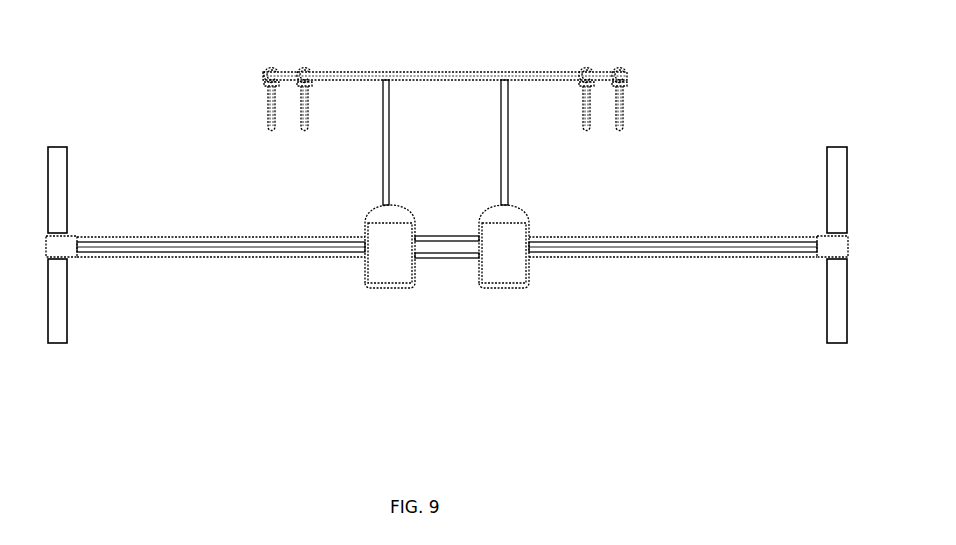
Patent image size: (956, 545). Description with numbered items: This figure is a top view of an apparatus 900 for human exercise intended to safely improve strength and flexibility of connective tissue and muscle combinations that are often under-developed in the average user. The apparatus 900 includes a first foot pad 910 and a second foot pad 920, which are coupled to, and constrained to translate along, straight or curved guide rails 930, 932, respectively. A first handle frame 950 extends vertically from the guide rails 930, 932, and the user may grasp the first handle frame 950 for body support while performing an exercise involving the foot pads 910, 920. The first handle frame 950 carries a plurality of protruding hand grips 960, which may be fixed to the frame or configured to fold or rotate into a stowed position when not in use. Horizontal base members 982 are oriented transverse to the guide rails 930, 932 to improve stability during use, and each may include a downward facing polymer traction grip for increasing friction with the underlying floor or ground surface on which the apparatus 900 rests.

The apparatus for human exercise 900 is at (206, 68).
The first foot pad 910 is at (517, 270).
The second foot pad 920 is at (386, 275).
The guide rail 930 is at (627, 238).
The guide rail 932 is at (238, 238).
The first handle frame 950 is at (450, 74).
The hand grips 960 is at (300, 97).
The horizontal base members 982 is at (62, 183).